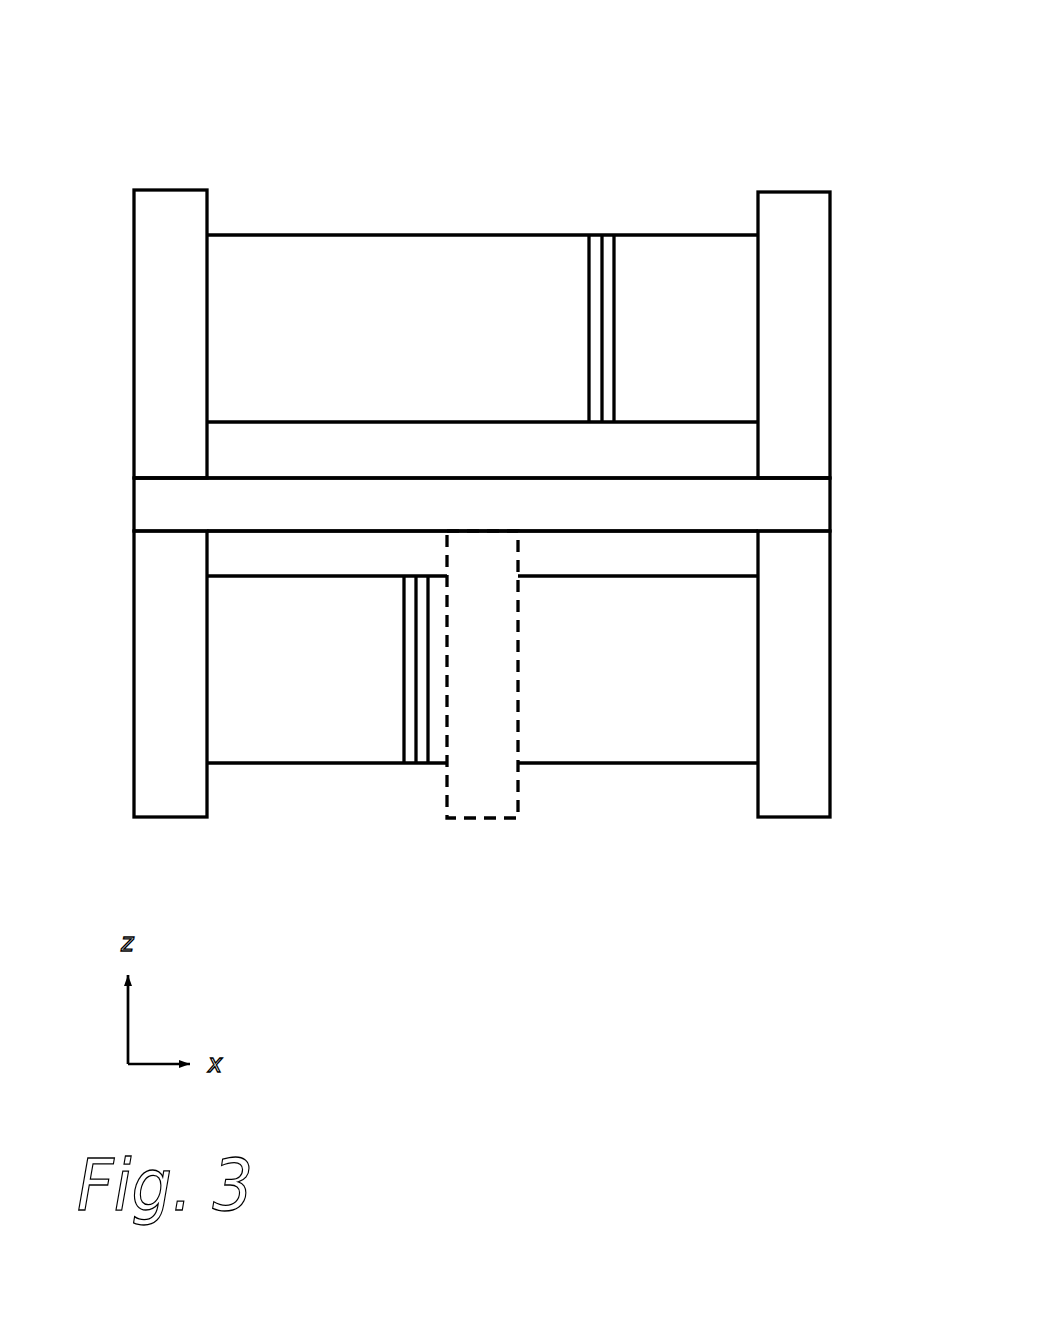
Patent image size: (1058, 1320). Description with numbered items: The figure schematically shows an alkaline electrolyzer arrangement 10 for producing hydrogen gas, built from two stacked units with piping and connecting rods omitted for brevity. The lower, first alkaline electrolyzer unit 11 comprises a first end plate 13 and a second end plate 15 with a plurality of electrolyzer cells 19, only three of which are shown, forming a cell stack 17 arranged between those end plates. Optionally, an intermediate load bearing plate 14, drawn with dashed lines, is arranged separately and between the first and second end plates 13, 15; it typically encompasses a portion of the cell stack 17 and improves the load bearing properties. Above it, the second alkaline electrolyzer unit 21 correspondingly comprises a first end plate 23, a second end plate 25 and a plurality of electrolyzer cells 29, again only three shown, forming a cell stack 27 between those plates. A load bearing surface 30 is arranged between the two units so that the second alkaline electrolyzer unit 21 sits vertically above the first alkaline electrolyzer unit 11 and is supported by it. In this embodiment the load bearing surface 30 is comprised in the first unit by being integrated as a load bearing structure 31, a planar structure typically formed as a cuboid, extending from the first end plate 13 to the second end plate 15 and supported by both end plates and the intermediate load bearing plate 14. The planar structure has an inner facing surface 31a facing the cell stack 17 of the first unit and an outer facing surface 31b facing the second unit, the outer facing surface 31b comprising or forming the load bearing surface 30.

The alkaline electrolyzer arrangement 10 is at (203, 100).
The first alkaline electrolyzer unit 11 is at (855, 832).
The first end plate 13 is at (183, 817).
The intermediate load bearing plate 14 is at (482, 818).
The second end plate 15 is at (791, 817).
The cell stack 17 is at (680, 763).
The electrolyzer cells 19 is at (407, 790).
The second alkaline electrolyzer unit 21 is at (148, 166).
The first end plate 23 is at (208, 192).
The second end plate 25 is at (758, 190).
The cell stack 27 is at (407, 235).
The electrolyzer cells 29 is at (592, 216).
The load bearing surface 30 is at (155, 475).
The load bearing structure 31 is at (498, 518).
The inner facing surface 31a is at (750, 548).
The outer facing surface 31b is at (215, 458).